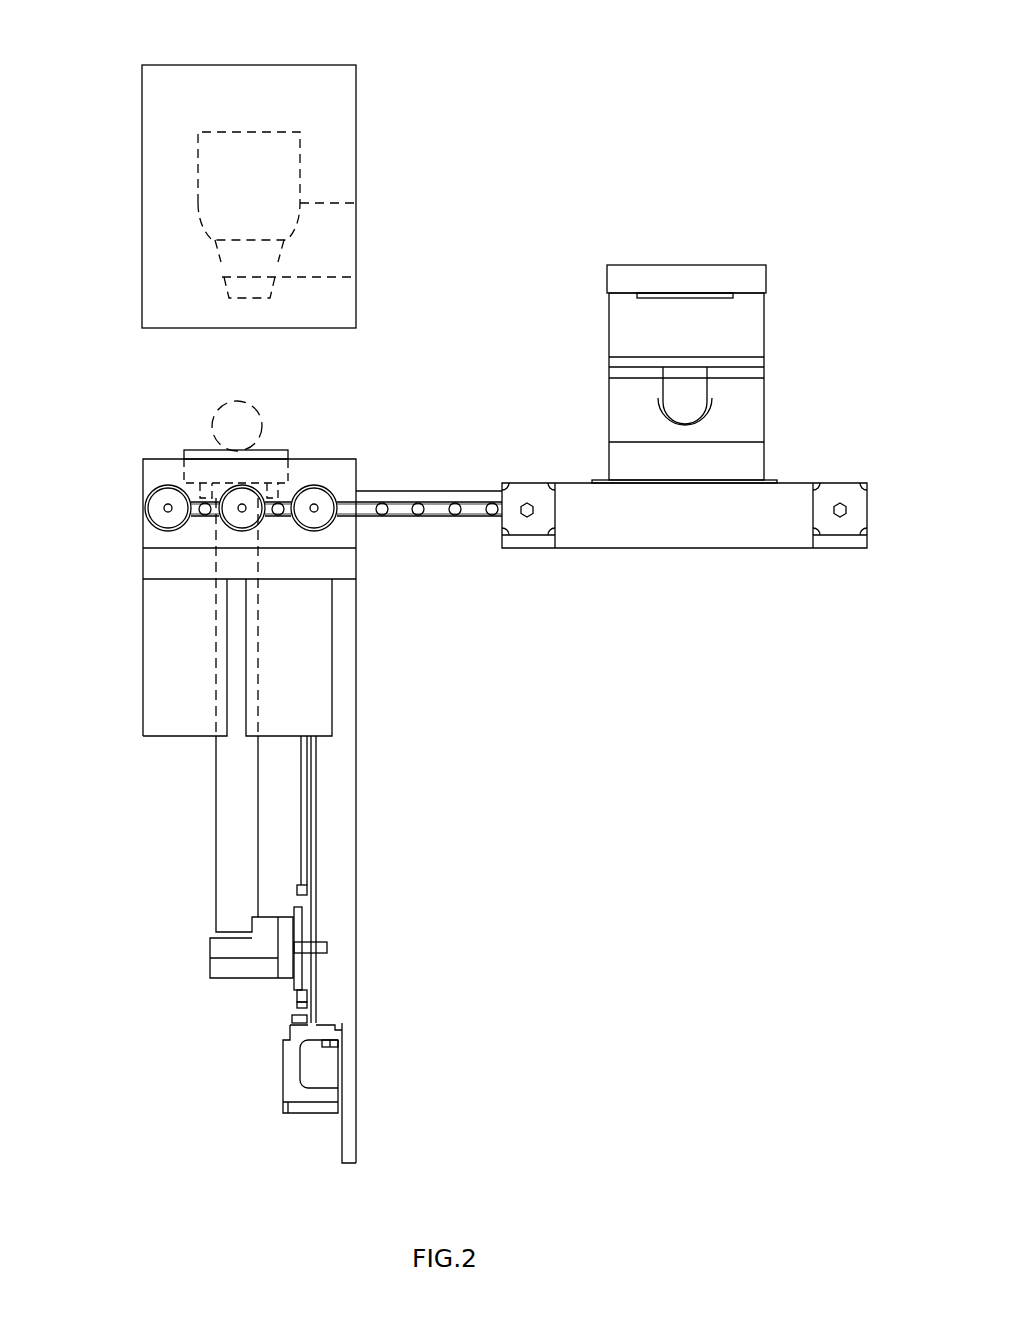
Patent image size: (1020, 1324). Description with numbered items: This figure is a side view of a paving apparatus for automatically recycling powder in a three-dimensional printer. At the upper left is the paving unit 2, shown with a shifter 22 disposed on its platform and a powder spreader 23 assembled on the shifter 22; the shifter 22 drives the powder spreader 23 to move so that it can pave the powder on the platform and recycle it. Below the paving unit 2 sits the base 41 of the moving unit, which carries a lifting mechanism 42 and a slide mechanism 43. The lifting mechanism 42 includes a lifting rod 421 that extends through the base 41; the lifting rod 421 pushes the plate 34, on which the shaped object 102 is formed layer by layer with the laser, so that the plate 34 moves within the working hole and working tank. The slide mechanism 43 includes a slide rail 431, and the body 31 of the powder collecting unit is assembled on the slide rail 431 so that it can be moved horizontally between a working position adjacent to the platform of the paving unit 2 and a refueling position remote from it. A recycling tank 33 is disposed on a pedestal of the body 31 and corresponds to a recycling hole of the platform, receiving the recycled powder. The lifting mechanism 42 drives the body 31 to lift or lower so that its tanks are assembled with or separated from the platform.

The paving unit 2 is at (331, 65).
The shifter 22 is at (336, 203).
The powder spreader 23 is at (197, 171).
The body 31 is at (766, 413).
The recycling tank 33 is at (733, 265).
The plate 34 is at (208, 450).
The base 41 is at (143, 472).
The lifting mechanism 42 is at (283, 1073).
The slide mechanism 43 is at (528, 549).
The shaped object 102 is at (262, 404).
The lifting rod 421 is at (216, 796).
The slide rail 431 is at (466, 501).